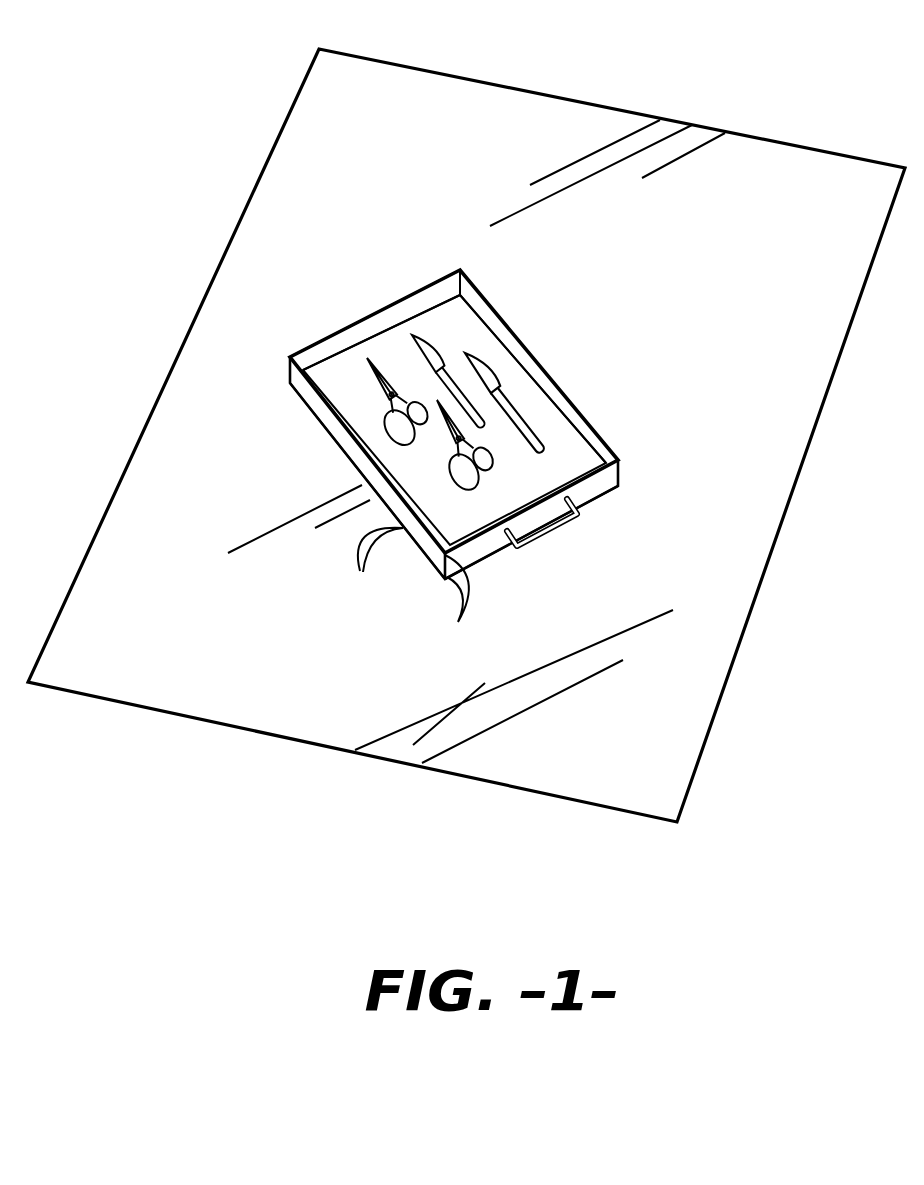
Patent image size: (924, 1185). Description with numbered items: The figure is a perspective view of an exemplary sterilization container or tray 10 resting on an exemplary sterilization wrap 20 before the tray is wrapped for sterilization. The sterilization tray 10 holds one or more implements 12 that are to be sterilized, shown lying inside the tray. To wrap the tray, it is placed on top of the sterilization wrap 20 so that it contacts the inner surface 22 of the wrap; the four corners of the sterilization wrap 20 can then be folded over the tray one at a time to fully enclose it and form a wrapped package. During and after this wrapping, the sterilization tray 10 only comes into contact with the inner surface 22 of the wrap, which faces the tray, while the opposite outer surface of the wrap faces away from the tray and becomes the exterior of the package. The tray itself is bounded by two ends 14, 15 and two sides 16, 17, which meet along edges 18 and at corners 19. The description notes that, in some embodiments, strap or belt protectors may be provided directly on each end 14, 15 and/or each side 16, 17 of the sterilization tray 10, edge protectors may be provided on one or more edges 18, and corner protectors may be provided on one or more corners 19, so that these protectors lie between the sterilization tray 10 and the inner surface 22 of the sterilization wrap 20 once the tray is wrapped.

The sterilization tray 10 is at (353, 338).
The implements 12 is at (537, 442).
The end 14 is at (400, 299).
The end 15 is at (608, 505).
The side 16 is at (318, 440).
The side 17 is at (535, 348).
The edge 18 is at (483, 295).
The corner 19 is at (290, 357).
The sterilization wrap 20 is at (400, 100).
The inner surface 22 is at (760, 180).